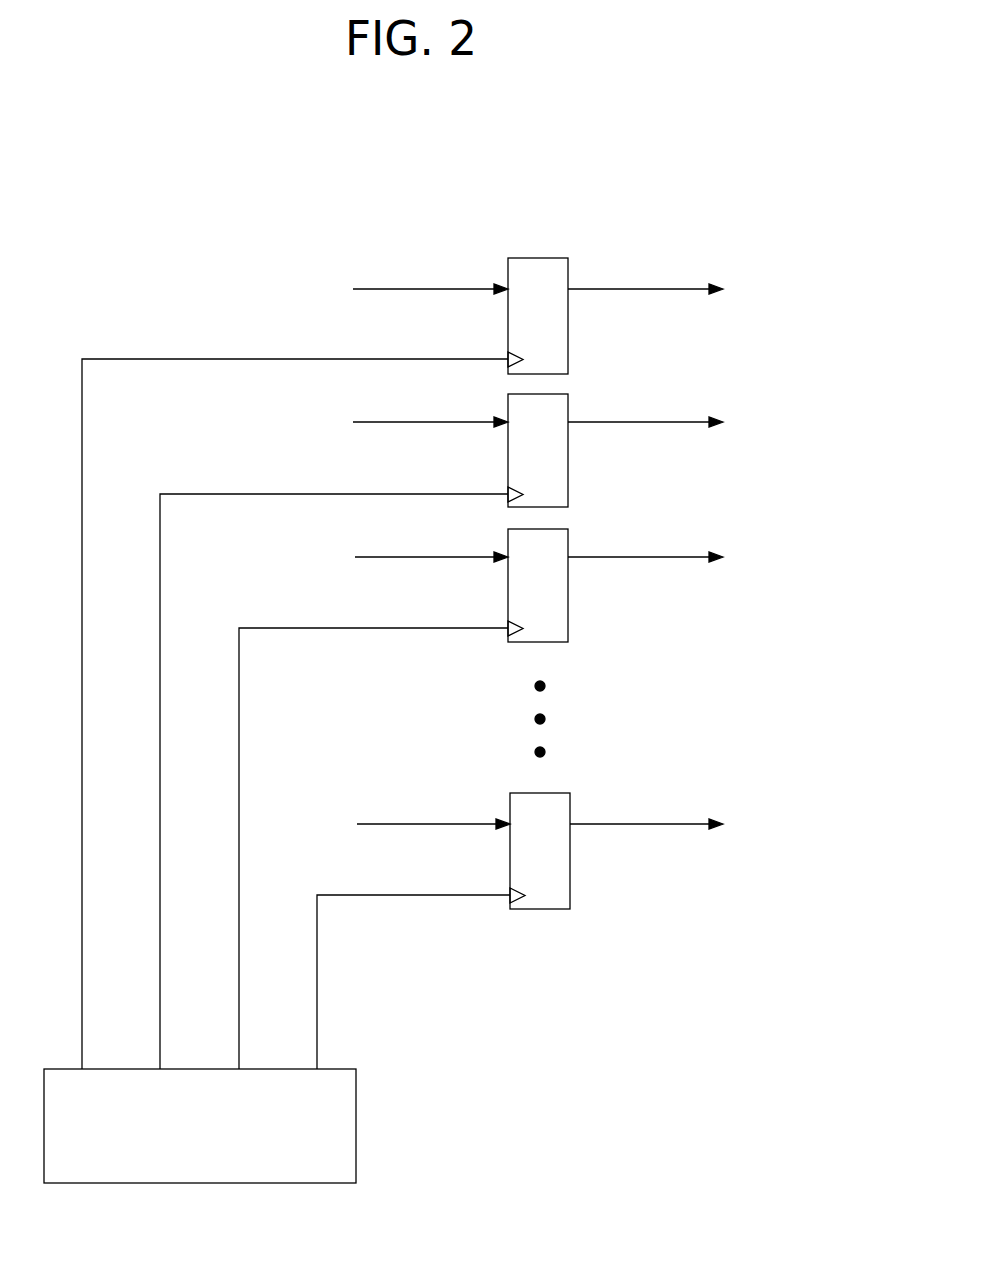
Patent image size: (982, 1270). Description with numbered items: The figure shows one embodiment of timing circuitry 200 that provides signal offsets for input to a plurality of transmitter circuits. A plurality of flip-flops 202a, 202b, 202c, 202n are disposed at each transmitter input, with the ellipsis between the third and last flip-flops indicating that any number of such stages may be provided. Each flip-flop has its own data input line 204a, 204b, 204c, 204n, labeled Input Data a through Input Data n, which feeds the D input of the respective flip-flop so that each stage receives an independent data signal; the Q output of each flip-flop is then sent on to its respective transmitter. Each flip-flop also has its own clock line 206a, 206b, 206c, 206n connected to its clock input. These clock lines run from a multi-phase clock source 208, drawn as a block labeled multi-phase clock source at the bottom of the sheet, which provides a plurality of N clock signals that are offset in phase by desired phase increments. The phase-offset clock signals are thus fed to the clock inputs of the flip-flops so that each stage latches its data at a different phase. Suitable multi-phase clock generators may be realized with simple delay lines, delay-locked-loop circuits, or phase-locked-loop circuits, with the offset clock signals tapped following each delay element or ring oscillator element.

The timing circuitry 200 is at (125, 216).
The flip-flop 202a is at (568, 277).
The flip-flop 202b is at (568, 410).
The flip-flop 202c is at (568, 534).
The flip-flop 202n is at (570, 803).
The data input line 204a is at (447, 288).
The data input line 204b is at (452, 421).
The data input line 204c is at (452, 556).
The data input line 204n is at (472, 817).
The clock line 206a is at (490, 359).
The clock line 206b is at (505, 494).
The clock line 206c is at (508, 626).
The clock line 206n is at (508, 896).
The multi-phase clock source 208 is at (356, 1125).